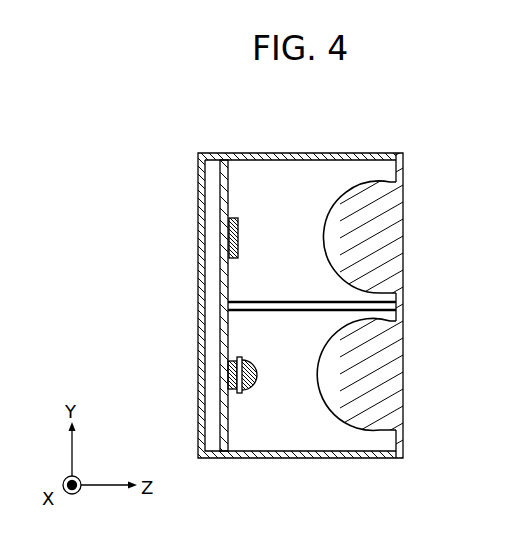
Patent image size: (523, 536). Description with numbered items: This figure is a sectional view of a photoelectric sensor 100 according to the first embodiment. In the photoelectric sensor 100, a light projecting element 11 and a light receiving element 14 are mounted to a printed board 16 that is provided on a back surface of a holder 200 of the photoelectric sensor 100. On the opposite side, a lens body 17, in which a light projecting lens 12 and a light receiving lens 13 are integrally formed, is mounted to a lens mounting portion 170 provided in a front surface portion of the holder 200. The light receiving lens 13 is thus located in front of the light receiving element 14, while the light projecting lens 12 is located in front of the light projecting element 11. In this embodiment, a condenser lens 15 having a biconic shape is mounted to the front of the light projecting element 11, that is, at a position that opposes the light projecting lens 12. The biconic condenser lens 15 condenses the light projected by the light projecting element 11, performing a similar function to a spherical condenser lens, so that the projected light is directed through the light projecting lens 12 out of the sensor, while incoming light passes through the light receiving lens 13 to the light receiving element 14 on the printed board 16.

The photoelectric sensor 100 is at (386, 128).
The holder 200 is at (288, 153).
The lens mounting portion 170 is at (401, 279).
The light receiving lens 13 is at (398, 221).
The light projecting lens 12 is at (398, 380).
The lens body 17 is at (398, 309).
The printed board 16 is at (224, 190).
The light receiving element 14 is at (232, 248).
The light projecting element 11 is at (232, 378).
The condenser lens 15 is at (247, 394).